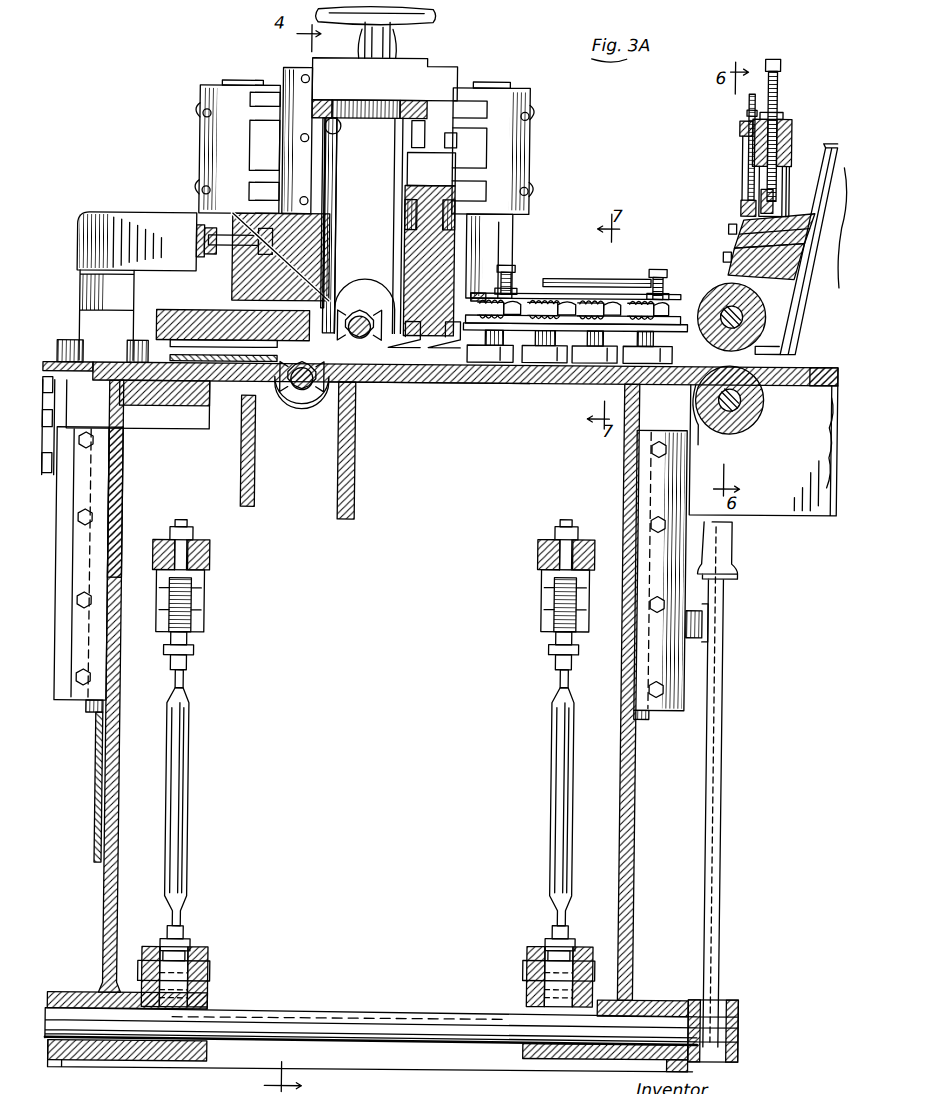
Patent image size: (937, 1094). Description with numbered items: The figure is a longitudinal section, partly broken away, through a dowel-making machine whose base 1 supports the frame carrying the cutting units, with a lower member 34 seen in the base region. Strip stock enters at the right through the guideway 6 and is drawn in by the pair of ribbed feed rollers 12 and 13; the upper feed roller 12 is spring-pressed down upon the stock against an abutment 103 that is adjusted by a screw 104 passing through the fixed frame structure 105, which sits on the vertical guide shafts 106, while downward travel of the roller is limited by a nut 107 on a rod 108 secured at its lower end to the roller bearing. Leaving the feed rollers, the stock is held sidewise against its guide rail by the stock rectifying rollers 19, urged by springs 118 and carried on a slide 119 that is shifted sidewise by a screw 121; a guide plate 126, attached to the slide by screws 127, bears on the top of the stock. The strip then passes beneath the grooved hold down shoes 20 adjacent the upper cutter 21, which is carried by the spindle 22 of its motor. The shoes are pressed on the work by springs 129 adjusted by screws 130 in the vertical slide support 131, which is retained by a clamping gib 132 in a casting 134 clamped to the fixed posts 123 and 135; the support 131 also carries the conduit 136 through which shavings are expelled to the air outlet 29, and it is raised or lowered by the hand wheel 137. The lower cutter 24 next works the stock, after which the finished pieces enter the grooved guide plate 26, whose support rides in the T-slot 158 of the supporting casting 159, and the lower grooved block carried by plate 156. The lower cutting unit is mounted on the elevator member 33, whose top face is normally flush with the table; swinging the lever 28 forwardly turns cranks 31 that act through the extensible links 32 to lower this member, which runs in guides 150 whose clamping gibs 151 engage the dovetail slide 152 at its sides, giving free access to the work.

The base 1 is at (107, 925).
The guideway 6 is at (812, 280).
The feed roller 12 is at (712, 288).
The feed roller 13 is at (755, 410).
The stock rectifying rollers 19 is at (505, 385).
The hold down shoes 20 is at (405, 348).
The upper cutter 21 is at (347, 285).
The spindle 22 is at (368, 286).
The lower cutter 24 is at (297, 412).
The upper grooved guide plate 26 is at (187, 312).
The lever 28 is at (445, 402).
The air outlet 29 is at (345, 100).
The cranks 31 is at (216, 960).
The extensible links 32 is at (196, 785).
The elevator member 33 is at (617, 463).
The cross bar 34 is at (357, 1022).
The abutment 103 is at (787, 208).
The screw 104 is at (780, 60).
The fixed frame structure 105 is at (797, 118).
The vertical guide shafts 106 is at (793, 190).
The nut 107 is at (742, 115).
The rod 108 is at (735, 150).
The springs 118 is at (627, 273).
The slide 119 is at (604, 295).
The screw 121 is at (390, 66).
The fixed post 123 is at (515, 226).
The guide plate 126 is at (668, 352).
The screws 127 is at (660, 266).
The springs 129 is at (392, 227).
The screws 130 is at (532, 150).
The vertical slide support 131 is at (403, 178).
The clamping gib 132 is at (295, 70).
The casting 134 is at (225, 153).
The fixed post 135 is at (233, 82).
The conduit 136 is at (300, 240).
The hand wheel 137 is at (432, 17).
The guides 150 is at (62, 712).
The clamping gibs 151 is at (124, 495).
The dovetail slide 152 is at (98, 718).
The plate 156 is at (98, 338).
The T-slot 158 is at (195, 247).
The supporting casting 159 is at (113, 232).